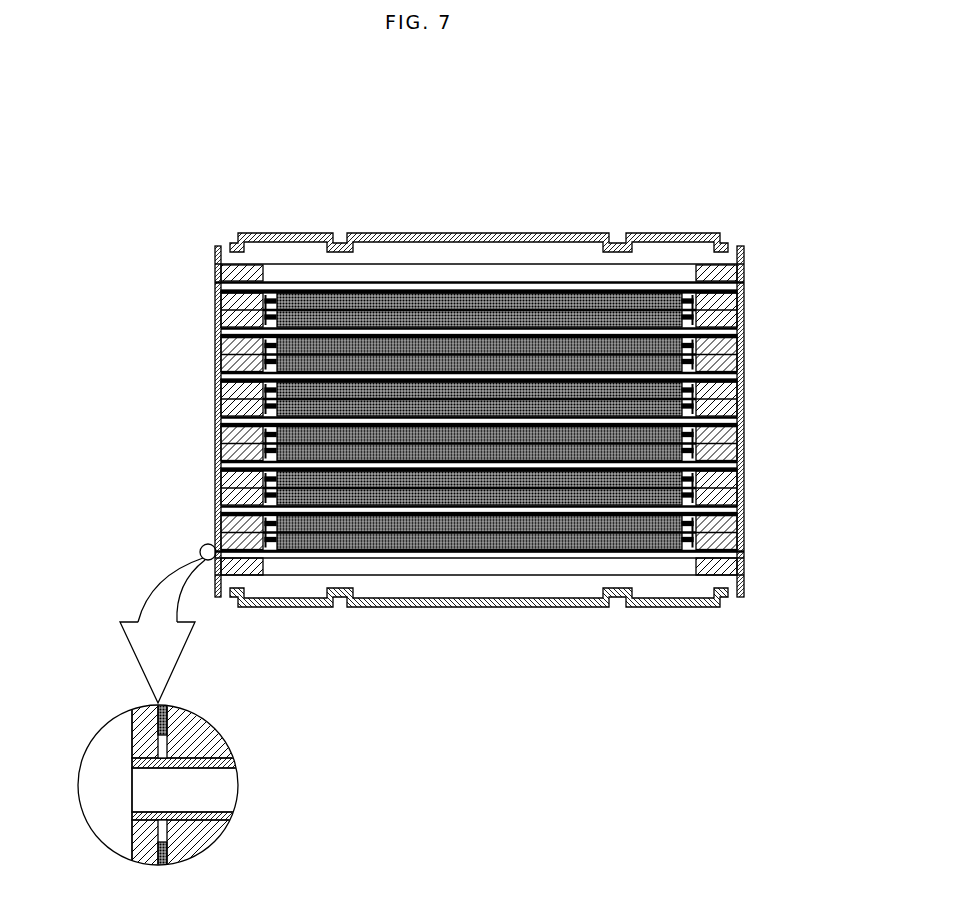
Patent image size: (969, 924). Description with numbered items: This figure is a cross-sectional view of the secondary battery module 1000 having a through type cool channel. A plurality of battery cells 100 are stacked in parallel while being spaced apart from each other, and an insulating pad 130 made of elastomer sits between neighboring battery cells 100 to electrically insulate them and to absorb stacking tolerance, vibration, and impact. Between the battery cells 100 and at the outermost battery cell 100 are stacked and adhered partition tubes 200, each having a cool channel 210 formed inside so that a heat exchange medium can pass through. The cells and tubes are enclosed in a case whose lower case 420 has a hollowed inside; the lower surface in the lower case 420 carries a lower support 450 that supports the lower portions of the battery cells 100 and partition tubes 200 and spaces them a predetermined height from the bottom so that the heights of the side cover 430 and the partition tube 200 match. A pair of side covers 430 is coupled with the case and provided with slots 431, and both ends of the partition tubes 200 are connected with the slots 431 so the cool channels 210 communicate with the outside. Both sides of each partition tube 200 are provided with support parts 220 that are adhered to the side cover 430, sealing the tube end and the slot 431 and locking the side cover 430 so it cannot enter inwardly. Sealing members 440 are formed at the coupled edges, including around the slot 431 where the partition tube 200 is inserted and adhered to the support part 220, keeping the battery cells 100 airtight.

The secondary battery module 1000 is at (607, 157).
The lower case 420 is at (373, 236).
The lower support 450 is at (465, 275).
The side cover 430 is at (745, 262).
The slot 431 is at (213, 483).
The battery cell 100 is at (560, 523).
The insulating pad 130 is at (522, 532).
The partition tube 200 is at (412, 560).
The cool channel 210 is at (383, 553).
The support part 220 is at (217, 747).
The sealing member 440 is at (167, 853).